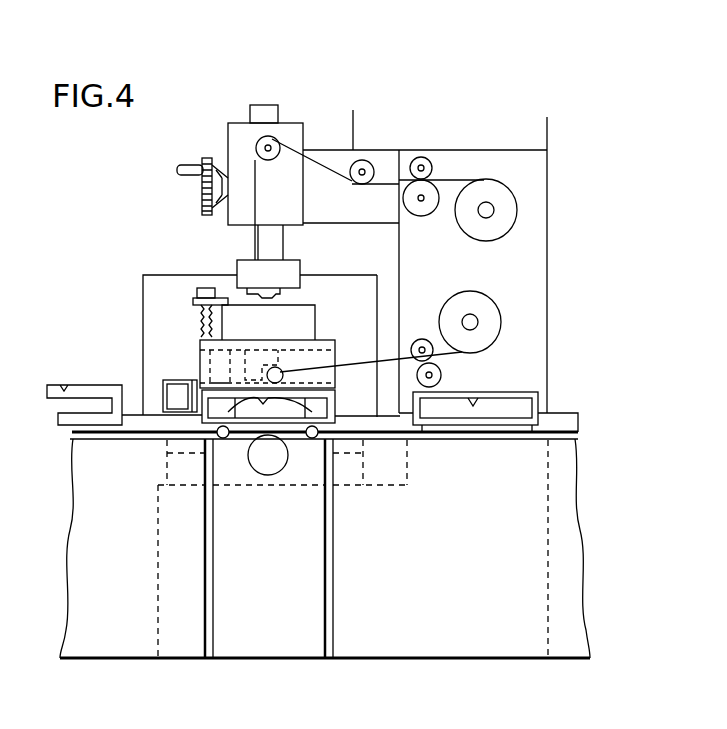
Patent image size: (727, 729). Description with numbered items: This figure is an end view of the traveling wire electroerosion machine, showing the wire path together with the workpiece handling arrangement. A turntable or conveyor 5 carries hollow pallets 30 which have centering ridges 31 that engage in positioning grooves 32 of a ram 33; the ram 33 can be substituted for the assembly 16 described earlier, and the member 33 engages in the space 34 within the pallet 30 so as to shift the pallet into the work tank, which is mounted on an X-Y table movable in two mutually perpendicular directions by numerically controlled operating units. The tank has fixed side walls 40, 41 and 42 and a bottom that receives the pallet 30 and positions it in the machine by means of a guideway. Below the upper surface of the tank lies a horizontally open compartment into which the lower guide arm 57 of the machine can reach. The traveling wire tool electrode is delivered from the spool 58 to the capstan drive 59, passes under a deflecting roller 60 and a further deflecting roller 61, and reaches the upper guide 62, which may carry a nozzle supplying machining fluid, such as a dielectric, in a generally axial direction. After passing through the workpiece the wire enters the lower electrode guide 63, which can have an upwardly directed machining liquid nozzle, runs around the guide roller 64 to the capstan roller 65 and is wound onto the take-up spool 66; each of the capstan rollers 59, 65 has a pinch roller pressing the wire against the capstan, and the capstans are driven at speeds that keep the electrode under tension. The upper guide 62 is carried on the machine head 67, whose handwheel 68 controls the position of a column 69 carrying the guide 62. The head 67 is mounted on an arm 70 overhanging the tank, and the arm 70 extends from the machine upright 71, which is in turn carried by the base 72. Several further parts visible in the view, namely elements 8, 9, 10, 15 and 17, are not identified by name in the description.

The turntable or conveyor 5 is at (518, 317).
The block 8 is at (297, 315).
The cassette housing 9 is at (315, 363).
The support 10 is at (338, 405).
The left cabinet section 15 is at (240, 618).
The assembly 16 is at (503, 628).
The support plate 17 is at (388, 427).
The pallet 30 is at (296, 415).
The centering ridges 31 is at (477, 390).
The positioning grooves 32 is at (273, 393).
The ram 33 is at (335, 430).
The space 34 is at (200, 412).
The side wall 40 is at (153, 273).
The side wall 41 is at (377, 290).
The side wall 42 is at (138, 318).
The lower guide arm 57 is at (360, 360).
The spool 58 is at (490, 188).
The capstan drive 59 is at (427, 185).
The deflecting roller 60 is at (362, 160).
The further deflecting roller 61 is at (270, 138).
The upper guide 62 is at (263, 290).
The lower electrode guide 63 is at (257, 370).
The guide roller 64 is at (283, 362).
The capstan roller 65 is at (432, 400).
The take-up spool 66 is at (463, 293).
The machine head 67 is at (229, 153).
The handwheel 68 is at (180, 168).
The column 69 is at (268, 242).
The arm 70 is at (332, 197).
The machine upright 71 is at (540, 212).
The base 72 is at (530, 508).